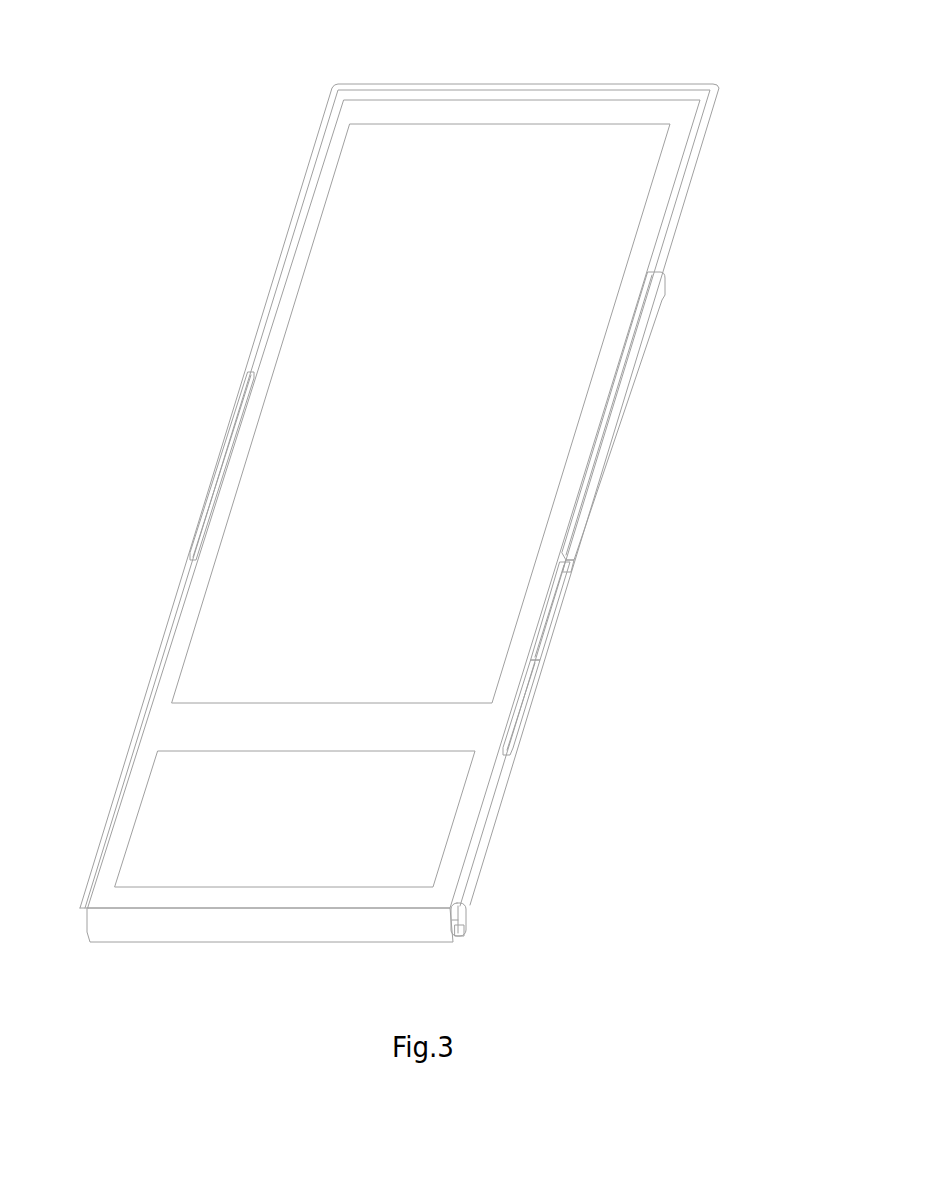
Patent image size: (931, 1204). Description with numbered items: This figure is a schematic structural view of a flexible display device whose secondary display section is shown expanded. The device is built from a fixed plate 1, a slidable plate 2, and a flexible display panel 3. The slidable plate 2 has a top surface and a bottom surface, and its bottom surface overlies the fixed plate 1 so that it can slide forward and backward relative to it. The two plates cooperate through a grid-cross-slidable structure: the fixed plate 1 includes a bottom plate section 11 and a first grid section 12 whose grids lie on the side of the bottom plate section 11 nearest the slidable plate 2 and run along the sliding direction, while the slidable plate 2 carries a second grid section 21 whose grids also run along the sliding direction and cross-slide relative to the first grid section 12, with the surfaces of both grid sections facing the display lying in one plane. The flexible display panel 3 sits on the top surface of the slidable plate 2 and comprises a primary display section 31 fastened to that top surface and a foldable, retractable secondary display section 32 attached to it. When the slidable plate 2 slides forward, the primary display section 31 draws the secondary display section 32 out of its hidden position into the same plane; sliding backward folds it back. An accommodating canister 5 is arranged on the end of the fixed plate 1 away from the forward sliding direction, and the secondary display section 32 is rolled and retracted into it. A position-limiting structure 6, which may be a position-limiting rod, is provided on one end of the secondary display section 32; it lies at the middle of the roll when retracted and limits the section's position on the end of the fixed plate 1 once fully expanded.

The fixed plate 1 is at (490, 827).
The slidable plate 2 is at (700, 130).
The flexible display panel 3 is at (447, 117).
The primary display section 31 is at (403, 228).
The secondary display section 32 is at (165, 835).
The second grid section 21 is at (597, 467).
The first grid section 12 is at (540, 637).
The bottom plate section 11 is at (535, 703).
The accommodating canister 5 is at (460, 913).
The position-limiting structure 6 is at (460, 930).